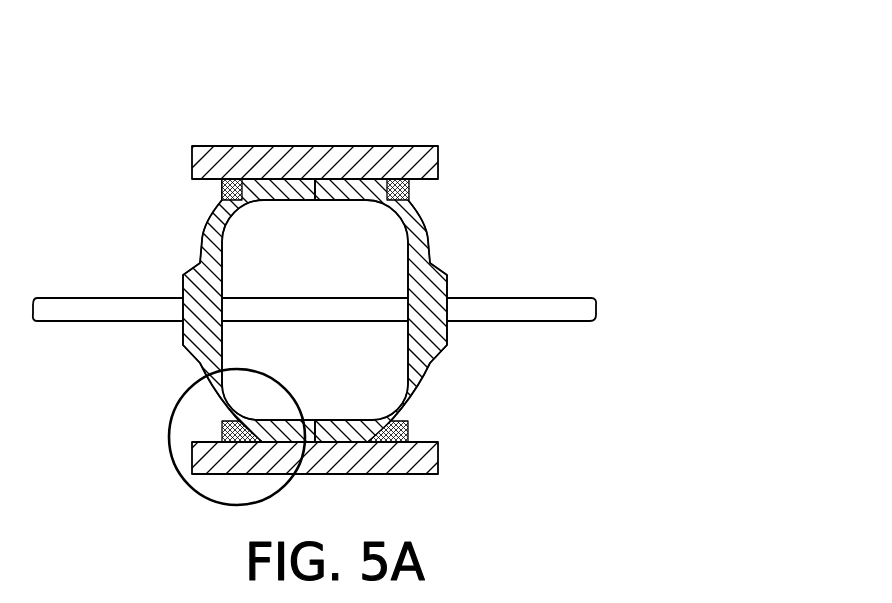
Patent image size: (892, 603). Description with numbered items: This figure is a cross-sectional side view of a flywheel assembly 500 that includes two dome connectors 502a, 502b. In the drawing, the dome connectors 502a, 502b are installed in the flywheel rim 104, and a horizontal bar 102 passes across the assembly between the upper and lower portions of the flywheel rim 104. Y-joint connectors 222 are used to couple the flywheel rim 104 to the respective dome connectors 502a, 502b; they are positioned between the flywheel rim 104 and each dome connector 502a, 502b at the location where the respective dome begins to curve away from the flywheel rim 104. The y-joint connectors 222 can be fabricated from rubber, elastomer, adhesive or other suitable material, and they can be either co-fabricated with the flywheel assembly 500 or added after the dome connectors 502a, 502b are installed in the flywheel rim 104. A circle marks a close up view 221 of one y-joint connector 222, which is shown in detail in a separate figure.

The flywheel assembly 500 is at (356, 266).
The flywheel rim 104 is at (368, 146).
The y-joint connectors 222 is at (223, 185).
The dome connector 502a is at (200, 240).
The dome connector 502b is at (431, 240).
The bar 102 is at (565, 298).
The close up view 221 is at (170, 447).